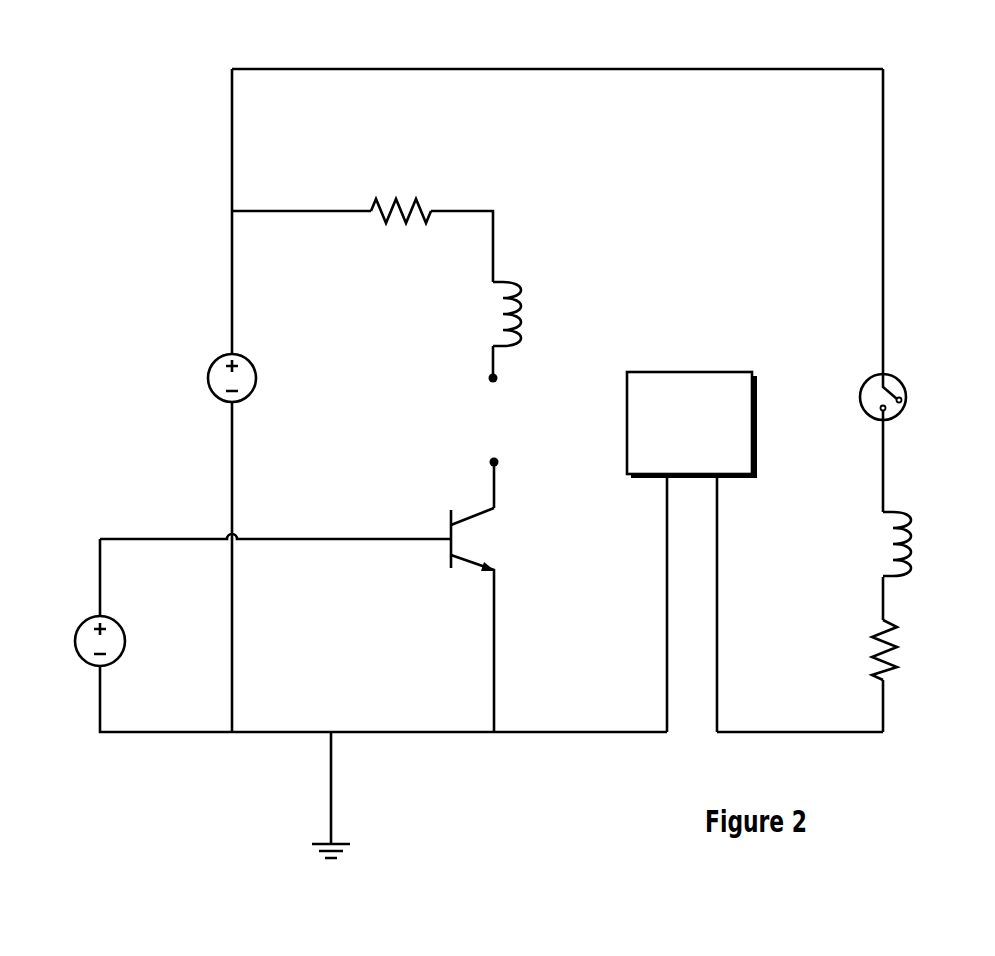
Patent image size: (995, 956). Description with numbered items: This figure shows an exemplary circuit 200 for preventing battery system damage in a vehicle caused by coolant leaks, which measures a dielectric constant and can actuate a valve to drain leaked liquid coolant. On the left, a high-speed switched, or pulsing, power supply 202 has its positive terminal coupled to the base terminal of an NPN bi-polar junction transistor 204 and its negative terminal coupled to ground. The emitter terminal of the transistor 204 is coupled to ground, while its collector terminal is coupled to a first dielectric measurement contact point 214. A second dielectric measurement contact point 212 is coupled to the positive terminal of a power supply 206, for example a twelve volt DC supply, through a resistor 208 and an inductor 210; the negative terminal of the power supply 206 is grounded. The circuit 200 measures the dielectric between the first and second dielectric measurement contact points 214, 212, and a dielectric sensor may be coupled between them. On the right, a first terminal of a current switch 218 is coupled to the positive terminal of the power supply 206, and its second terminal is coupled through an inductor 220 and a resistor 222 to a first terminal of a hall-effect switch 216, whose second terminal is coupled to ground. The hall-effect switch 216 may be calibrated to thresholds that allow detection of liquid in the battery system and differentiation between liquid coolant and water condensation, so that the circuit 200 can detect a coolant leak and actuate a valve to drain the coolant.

The circuit 200 is at (103, 55).
The high-speed switched power supply 202 is at (76, 641).
The bi-polar junction transistor 204 is at (465, 568).
The power supply 206 is at (209, 378).
The resistor 208 is at (399, 200).
The inductor 210 is at (518, 288).
The second dielectric measurement contact point 212 is at (490, 378).
The first dielectric measurement contact point 214 is at (491, 462).
The hall-effect switch 216 is at (626, 405).
The current switch 218 is at (906, 396).
The inductor 220 is at (910, 540).
The resistor 222 is at (896, 625).